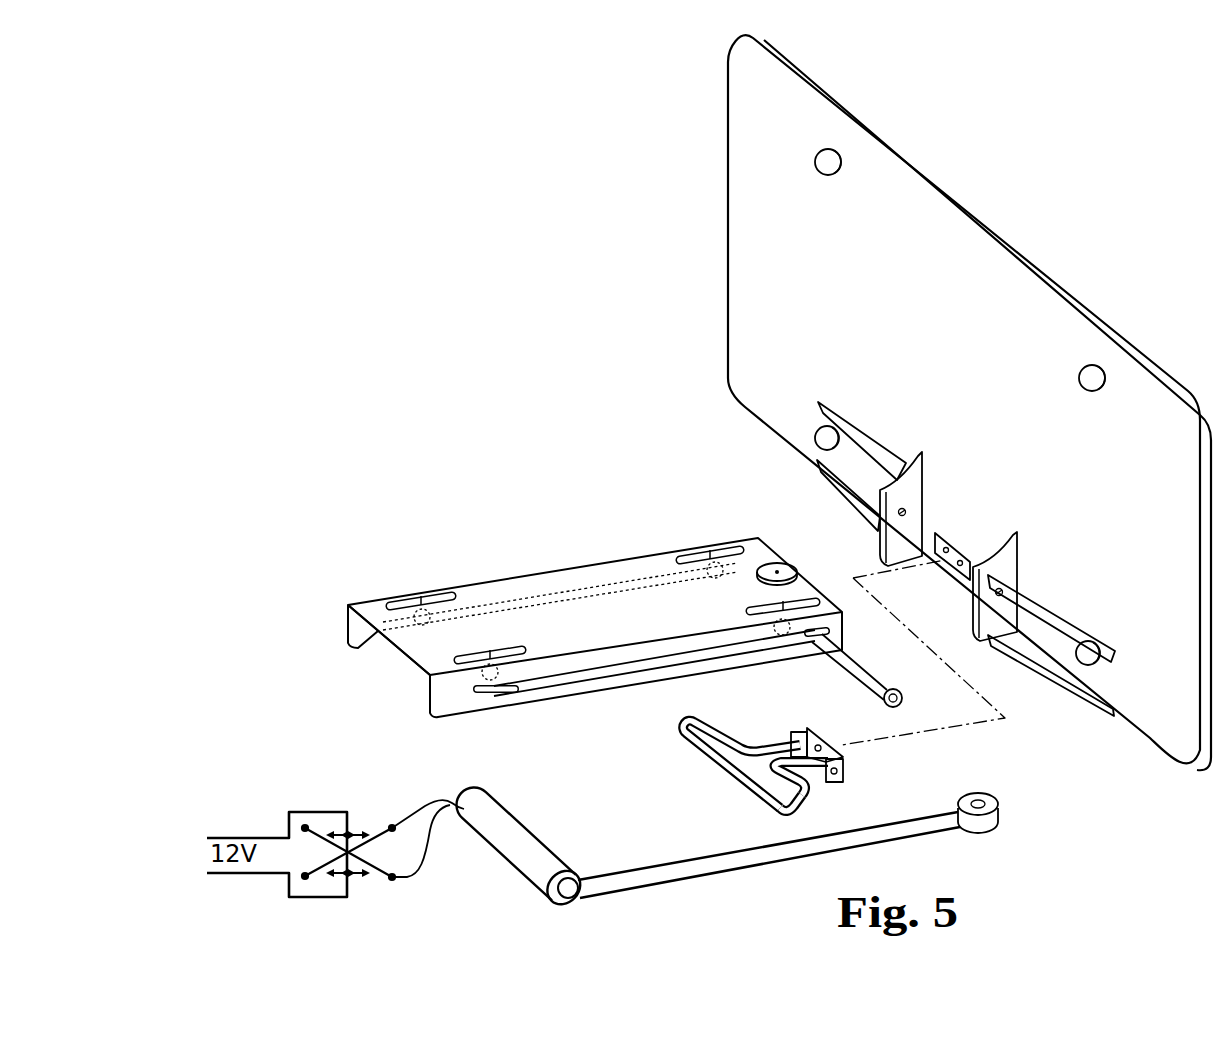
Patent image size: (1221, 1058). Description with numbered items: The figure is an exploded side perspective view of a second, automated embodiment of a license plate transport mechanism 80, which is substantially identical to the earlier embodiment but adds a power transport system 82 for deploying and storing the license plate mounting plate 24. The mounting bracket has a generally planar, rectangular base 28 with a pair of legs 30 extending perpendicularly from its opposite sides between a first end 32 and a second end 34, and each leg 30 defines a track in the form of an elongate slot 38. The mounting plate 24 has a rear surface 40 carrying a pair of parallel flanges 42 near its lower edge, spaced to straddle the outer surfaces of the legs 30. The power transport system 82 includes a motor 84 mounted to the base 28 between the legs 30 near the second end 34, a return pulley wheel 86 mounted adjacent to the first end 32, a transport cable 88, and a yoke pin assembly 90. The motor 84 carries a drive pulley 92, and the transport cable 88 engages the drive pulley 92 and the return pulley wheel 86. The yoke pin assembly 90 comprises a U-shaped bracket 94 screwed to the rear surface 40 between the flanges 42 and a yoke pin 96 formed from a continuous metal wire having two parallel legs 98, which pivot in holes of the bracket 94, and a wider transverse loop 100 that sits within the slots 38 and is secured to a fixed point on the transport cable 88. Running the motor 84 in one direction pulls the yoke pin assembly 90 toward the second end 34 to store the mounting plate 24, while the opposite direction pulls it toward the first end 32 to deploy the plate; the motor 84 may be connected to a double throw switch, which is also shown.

The license plate mounting plate 24 is at (1054, 288).
The rear surface 40 is at (971, 388).
The flanges 42 is at (908, 460).
The license plate transport mechanism 80 is at (564, 297).
The base 28 is at (651, 627).
The legs 30 is at (346, 643).
The second end 34 is at (398, 652).
The first end 32 is at (768, 556).
The elongate slot 38 is at (508, 698).
The yoke pin 96 is at (712, 764).
The transverse loop 100 is at (752, 795).
The yoke pin assembly 90 is at (808, 776).
The legs 98 is at (770, 738).
The U-shaped bracket 94 is at (845, 770).
The power transport system 82 is at (724, 855).
The motor 84 is at (532, 824).
The drive pulley 92 is at (557, 896).
The transport cable 88 is at (661, 858).
The return pulley wheel 86 is at (997, 803).